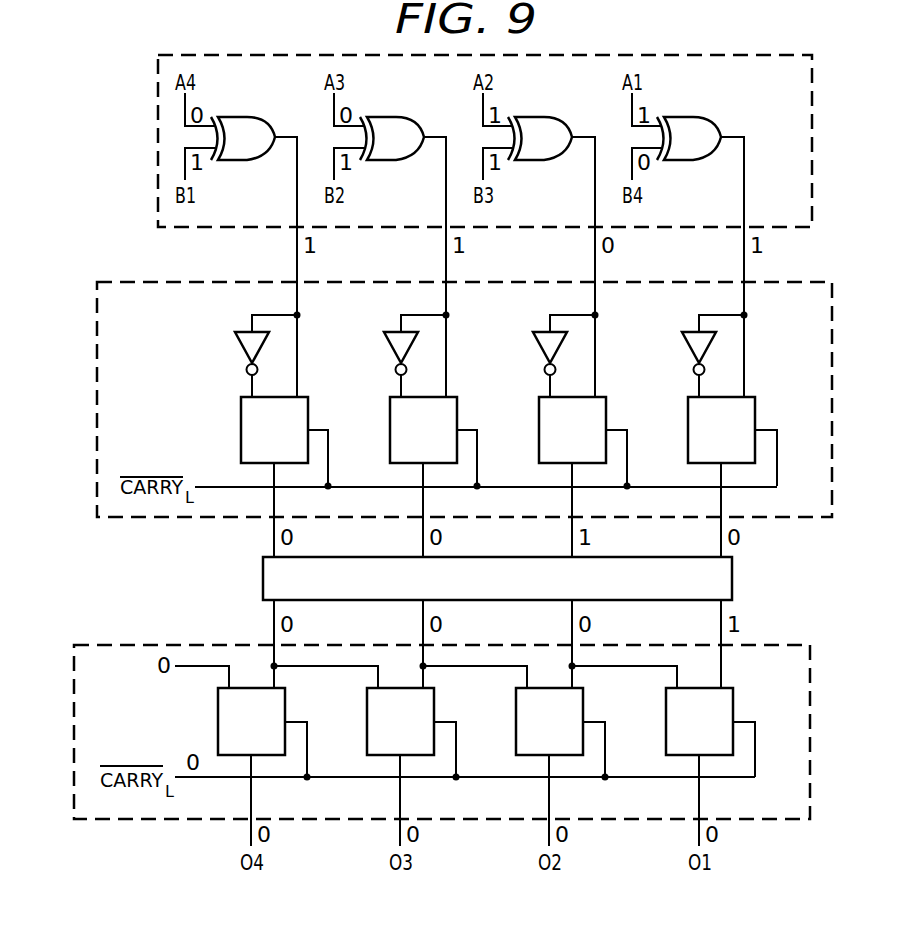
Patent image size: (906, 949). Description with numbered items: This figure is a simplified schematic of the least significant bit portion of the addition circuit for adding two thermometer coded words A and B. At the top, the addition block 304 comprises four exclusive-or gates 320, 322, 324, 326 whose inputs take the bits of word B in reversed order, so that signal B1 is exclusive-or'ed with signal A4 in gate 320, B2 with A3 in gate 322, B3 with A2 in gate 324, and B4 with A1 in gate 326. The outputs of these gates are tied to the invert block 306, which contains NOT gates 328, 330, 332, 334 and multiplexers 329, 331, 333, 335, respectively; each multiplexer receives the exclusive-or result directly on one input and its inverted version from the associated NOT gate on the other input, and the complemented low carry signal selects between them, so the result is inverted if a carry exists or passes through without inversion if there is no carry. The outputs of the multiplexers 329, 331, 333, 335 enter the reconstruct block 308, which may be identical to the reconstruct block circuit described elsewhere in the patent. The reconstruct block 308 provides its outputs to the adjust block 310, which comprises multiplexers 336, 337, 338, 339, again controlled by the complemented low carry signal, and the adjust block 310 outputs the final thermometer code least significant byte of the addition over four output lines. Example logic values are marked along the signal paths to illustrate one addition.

The addition block 304 is at (157, 125).
The invert block 306 is at (97, 431).
The reconstruct block 308 is at (263, 580).
The adjust block 310 is at (74, 735).
The exclusive-or gate 320 is at (234, 115).
The exclusive-or gate 322 is at (383, 115).
The exclusive-or gate 324 is at (531, 115).
The exclusive-or gate 326 is at (680, 115).
The NOT gate 328 is at (243, 350).
The multiplexer 329 is at (309, 420).
The NOT gate 330 is at (392, 350).
The multiplexer 331 is at (458, 420).
The NOT gate 332 is at (541, 350).
The multiplexer 333 is at (607, 420).
The NOT gate 334 is at (690, 350).
The multiplexer 335 is at (756, 420).
The multiplexer 336 is at (287, 710).
The multiplexer 337 is at (436, 710).
The multiplexer 338 is at (585, 710).
The multiplexer 339 is at (735, 710).